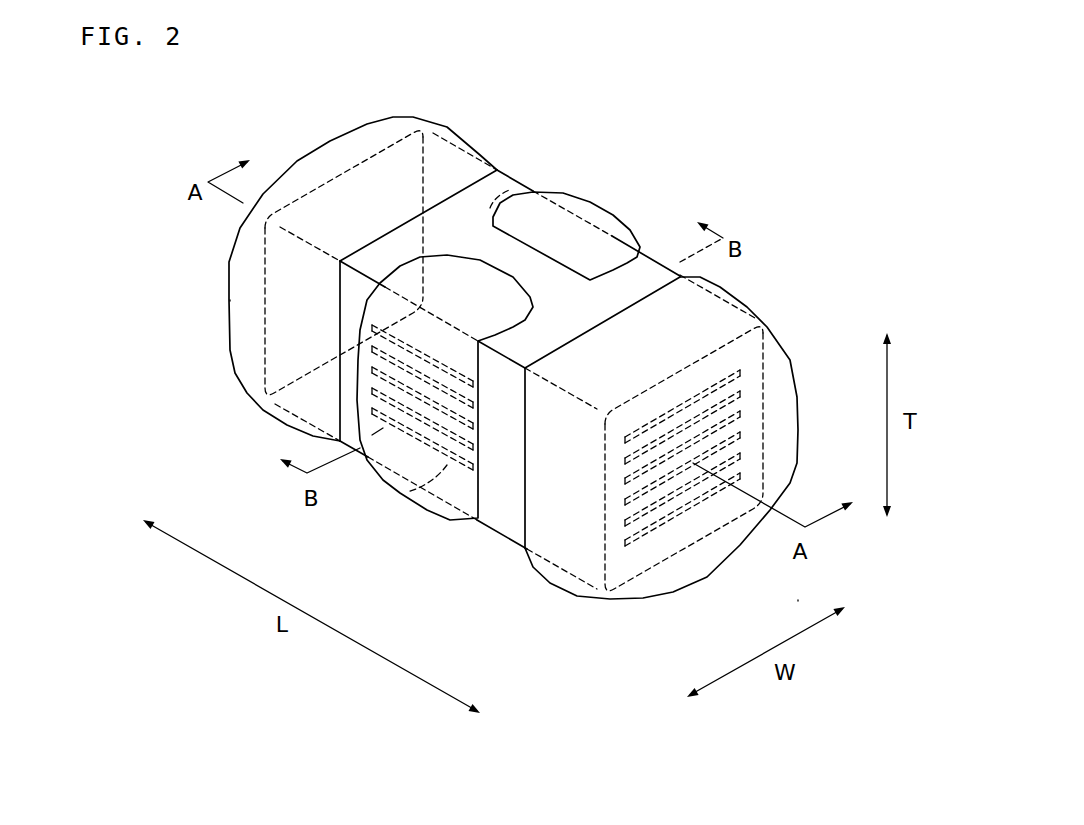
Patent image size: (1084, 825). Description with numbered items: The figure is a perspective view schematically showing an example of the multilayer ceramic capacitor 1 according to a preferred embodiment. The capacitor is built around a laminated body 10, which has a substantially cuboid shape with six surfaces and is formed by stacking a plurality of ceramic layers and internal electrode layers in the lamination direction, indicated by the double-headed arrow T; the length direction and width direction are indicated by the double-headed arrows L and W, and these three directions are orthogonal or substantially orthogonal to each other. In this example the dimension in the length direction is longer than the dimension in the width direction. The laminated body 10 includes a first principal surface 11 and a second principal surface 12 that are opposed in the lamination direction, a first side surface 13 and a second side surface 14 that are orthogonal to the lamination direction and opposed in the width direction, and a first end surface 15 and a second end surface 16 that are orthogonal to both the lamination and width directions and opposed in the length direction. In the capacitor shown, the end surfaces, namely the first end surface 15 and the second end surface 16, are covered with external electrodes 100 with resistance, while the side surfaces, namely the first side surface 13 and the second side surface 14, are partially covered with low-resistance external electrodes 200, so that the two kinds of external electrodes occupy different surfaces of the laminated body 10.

The multilayer ceramic capacitor 1 is at (768, 132).
The laminated body 10 is at (510, 170).
The first principal surface 11 is at (672, 266).
The second principal surface 12 is at (400, 493).
The first side surface 13 is at (503, 507).
The second side surface 14 is at (513, 186).
The first end surface 15 is at (345, 197).
The second end surface 16 is at (720, 367).
The external electrode with resistance 100 is at (373, 135).
The low-resistance external electrode 200 is at (590, 213).